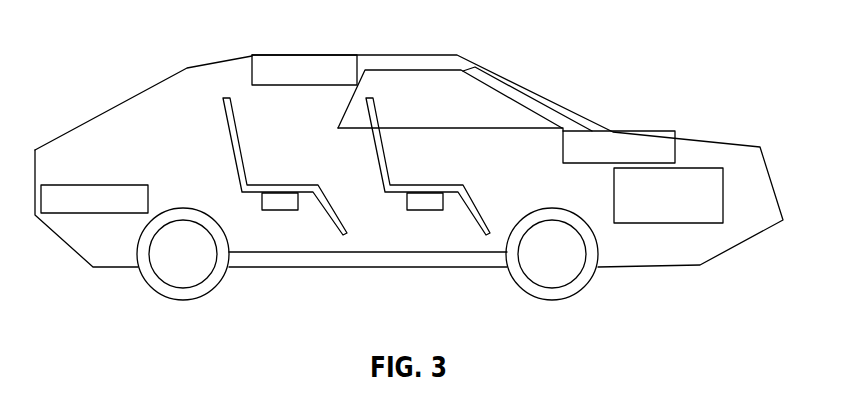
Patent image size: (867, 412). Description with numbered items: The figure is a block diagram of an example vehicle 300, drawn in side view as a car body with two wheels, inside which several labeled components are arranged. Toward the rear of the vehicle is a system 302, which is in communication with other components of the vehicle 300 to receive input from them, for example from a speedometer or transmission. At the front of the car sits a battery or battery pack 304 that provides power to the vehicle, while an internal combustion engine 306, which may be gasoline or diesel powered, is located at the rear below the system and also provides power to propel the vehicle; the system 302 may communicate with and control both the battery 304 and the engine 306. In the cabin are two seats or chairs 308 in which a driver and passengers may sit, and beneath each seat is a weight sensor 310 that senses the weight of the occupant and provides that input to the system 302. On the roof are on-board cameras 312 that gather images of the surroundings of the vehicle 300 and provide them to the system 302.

The vehicle 300 is at (628, 87).
The system 302 is at (677, 148).
The battery/battery pack 304 is at (120, 185).
The internal combustion engine 306 is at (650, 223).
The seats or chairs 308 is at (230, 137).
The weight sensor 310 is at (268, 210).
The on-board cameras 312 is at (252, 62).